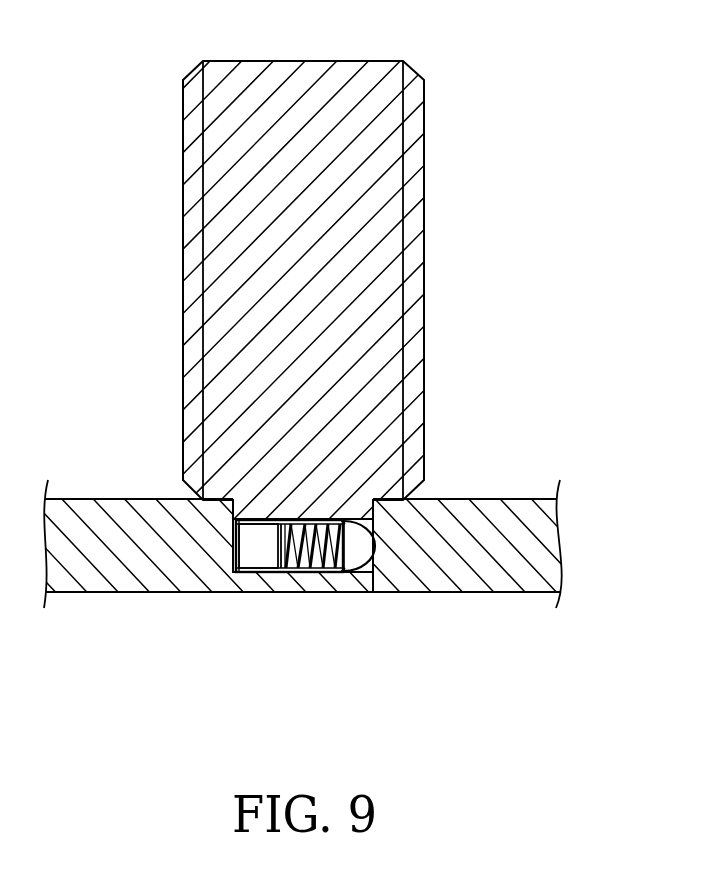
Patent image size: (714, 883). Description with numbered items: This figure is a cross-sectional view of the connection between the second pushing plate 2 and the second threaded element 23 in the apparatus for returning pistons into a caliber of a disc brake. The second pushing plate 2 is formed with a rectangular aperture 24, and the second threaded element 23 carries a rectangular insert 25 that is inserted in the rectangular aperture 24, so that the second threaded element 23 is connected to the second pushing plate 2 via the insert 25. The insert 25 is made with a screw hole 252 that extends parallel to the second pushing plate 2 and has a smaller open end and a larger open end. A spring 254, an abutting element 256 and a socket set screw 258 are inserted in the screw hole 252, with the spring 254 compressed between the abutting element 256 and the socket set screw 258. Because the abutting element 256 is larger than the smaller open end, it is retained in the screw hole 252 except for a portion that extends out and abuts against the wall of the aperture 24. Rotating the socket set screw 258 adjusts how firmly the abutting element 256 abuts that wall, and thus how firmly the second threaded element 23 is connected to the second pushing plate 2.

The second pushing plate 2 is at (495, 607).
The second threaded element 23 is at (412, 313).
The rectangular aperture 24 is at (375, 518).
The rectangular insert 25 is at (268, 578).
The screw hole 252 is at (342, 572).
The spring 254 is at (313, 570).
The abutting element 256 is at (358, 551).
The socket set screw 258 is at (252, 557).